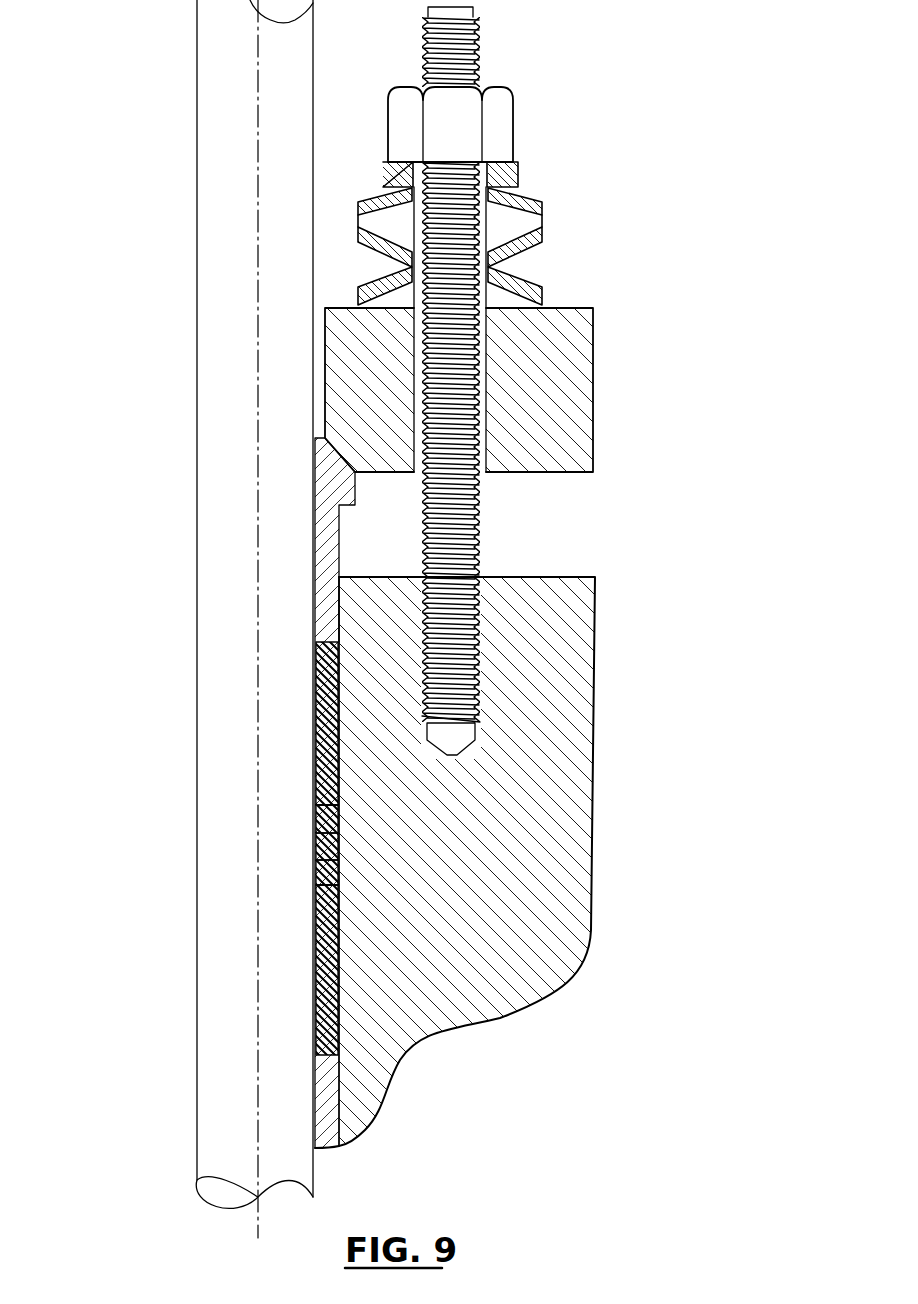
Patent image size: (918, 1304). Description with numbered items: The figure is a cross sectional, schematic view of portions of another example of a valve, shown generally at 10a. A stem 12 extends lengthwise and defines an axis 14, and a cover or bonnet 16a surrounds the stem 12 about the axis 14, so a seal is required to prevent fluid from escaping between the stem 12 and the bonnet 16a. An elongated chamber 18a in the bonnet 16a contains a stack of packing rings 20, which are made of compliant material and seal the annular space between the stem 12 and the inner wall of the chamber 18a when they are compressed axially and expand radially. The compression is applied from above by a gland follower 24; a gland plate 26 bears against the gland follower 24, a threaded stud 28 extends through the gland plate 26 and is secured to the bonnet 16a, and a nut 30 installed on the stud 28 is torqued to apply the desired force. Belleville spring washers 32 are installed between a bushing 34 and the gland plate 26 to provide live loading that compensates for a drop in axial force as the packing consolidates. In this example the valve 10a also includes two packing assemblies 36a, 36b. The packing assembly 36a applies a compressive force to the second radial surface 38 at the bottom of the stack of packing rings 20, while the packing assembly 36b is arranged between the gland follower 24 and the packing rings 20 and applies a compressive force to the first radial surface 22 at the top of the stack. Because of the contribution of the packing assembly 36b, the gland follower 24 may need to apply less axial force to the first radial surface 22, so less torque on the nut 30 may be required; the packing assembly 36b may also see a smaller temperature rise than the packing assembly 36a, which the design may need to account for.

The valve 10a is at (105, 163).
The stem 12 is at (220, 292).
The axis 14 is at (257, 368).
The bonnet 16a is at (555, 645).
The elongated chamber 18a is at (352, 672).
The packing rings 20 is at (313, 816).
The first radial surface 22 is at (323, 796).
The gland follower 24 is at (323, 542).
The gland plate 26 is at (550, 395).
The threaded stud 28 is at (462, 53).
The nut 30 is at (500, 123).
The Belleville spring washers 32 is at (558, 230).
The bushing 34 is at (505, 172).
The packing assembly 36a is at (306, 1012).
The packing assembly 36b is at (306, 745).
The second radial surface 38 is at (320, 898).